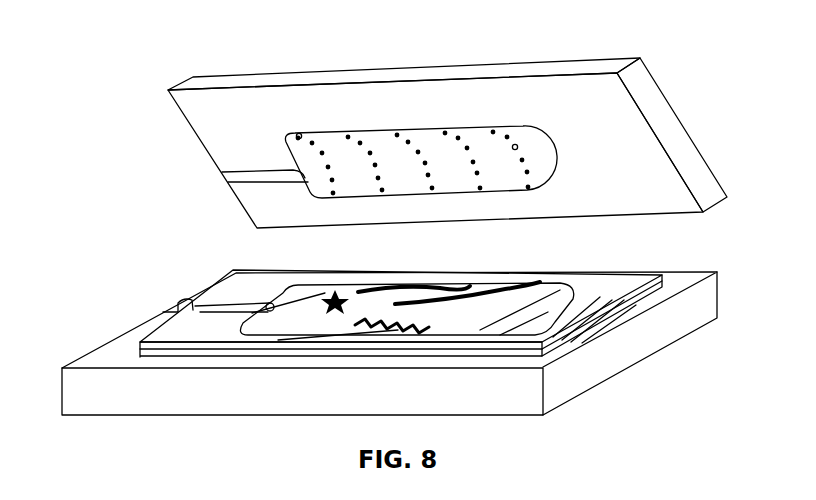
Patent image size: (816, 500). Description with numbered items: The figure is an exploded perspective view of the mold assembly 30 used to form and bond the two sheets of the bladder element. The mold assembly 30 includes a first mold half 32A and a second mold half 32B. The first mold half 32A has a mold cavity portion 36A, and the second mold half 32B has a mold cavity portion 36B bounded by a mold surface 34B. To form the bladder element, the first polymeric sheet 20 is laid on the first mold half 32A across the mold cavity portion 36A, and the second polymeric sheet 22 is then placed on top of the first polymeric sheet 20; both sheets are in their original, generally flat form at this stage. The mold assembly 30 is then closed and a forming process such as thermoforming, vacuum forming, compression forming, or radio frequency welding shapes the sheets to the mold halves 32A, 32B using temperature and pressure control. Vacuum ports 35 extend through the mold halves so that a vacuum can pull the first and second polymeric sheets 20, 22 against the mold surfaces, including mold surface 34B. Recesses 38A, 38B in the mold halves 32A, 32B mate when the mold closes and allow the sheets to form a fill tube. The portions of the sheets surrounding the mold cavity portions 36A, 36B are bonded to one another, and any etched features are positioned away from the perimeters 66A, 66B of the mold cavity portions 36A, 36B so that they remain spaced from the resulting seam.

The mold assembly 30 is at (733, 58).
The first mold half 32A is at (140, 405).
The second mold half 32B is at (210, 78).
The recess 38A is at (190, 302).
The recess 38B is at (253, 178).
The mold cavity portion 36B is at (340, 153).
The mold cavity portion 36A is at (406, 308).
The mold surface 34B is at (488, 142).
The vacuum ports 35 is at (517, 145).
The perimeter 66B is at (300, 133).
The perimeter 66A is at (268, 312).
The first polymeric sheet 20 is at (565, 340).
The second polymeric sheet 22 is at (632, 305).